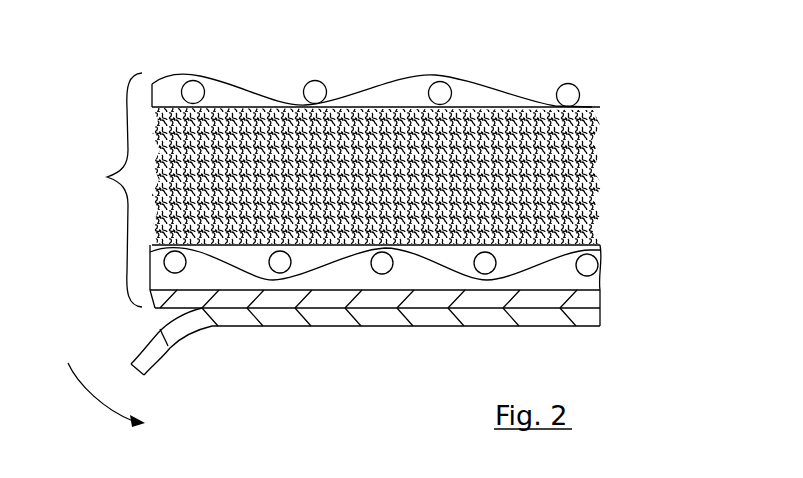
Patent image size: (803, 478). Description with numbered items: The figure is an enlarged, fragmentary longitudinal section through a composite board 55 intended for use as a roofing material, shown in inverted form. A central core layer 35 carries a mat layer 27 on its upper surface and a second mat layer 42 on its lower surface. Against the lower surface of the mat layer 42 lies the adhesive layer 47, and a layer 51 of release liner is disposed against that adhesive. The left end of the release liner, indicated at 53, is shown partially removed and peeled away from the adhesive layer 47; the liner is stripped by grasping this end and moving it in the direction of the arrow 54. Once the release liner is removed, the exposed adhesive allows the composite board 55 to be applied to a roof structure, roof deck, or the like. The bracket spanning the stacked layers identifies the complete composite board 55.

The mat layer 27 is at (590, 106).
The insulating layer 35 is at (597, 165).
The mat layer 42 is at (600, 262).
The adhesive layer 47 is at (600, 300).
The layer of release liner 51 is at (600, 323).
The left end of the layer of release liner 53 is at (150, 369).
The arrow 54 is at (107, 414).
The composite board 55 is at (107, 177).